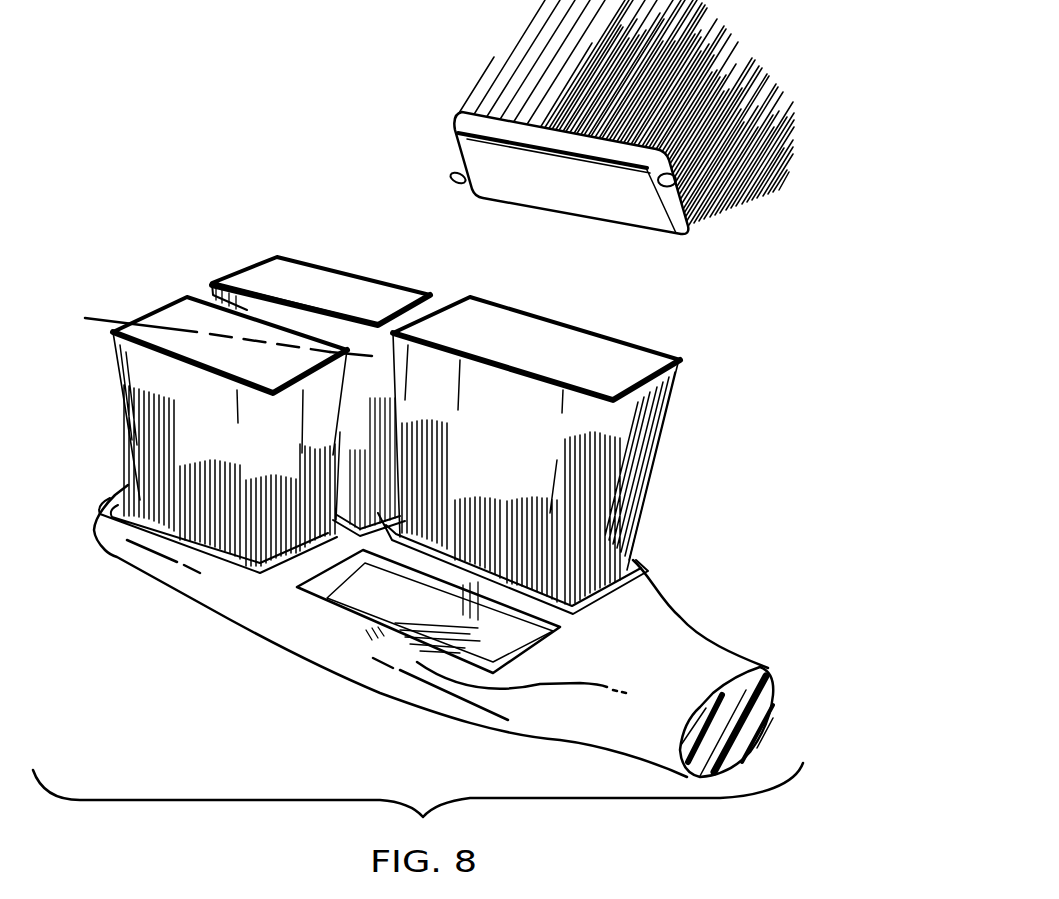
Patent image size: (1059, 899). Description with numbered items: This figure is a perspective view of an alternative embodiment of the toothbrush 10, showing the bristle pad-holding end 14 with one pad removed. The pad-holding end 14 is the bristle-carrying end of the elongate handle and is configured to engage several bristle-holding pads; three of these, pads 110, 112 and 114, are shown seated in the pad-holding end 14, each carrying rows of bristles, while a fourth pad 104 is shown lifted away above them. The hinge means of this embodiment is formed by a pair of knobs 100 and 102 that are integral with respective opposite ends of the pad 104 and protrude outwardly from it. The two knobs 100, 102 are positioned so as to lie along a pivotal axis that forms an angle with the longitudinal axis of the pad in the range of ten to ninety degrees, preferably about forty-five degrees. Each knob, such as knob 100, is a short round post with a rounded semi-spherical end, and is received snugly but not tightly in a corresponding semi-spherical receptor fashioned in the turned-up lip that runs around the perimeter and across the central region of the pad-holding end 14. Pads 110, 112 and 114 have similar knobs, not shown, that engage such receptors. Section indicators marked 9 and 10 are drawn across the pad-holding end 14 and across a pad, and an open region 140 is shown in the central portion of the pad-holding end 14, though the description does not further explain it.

The section line 9- 9 is at (93, 502).
The toothbrush 10 is at (94, 302).
The pad-holding end 14 is at (307, 645).
The knob 100 is at (655, 207).
The knob 102 is at (452, 178).
The pad 104 is at (573, 188).
The pad 110 is at (637, 580).
The pad 112 is at (400, 480).
The pad 114 is at (237, 548).
The opening in handle head 140 is at (353, 569).